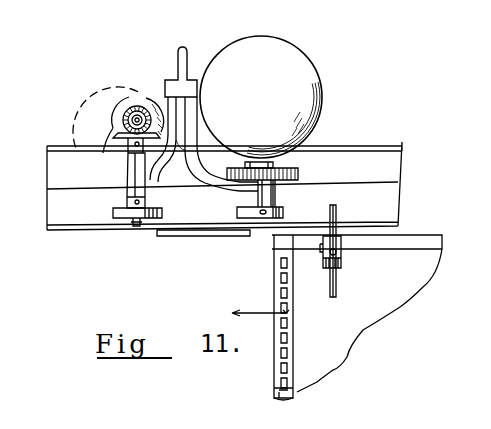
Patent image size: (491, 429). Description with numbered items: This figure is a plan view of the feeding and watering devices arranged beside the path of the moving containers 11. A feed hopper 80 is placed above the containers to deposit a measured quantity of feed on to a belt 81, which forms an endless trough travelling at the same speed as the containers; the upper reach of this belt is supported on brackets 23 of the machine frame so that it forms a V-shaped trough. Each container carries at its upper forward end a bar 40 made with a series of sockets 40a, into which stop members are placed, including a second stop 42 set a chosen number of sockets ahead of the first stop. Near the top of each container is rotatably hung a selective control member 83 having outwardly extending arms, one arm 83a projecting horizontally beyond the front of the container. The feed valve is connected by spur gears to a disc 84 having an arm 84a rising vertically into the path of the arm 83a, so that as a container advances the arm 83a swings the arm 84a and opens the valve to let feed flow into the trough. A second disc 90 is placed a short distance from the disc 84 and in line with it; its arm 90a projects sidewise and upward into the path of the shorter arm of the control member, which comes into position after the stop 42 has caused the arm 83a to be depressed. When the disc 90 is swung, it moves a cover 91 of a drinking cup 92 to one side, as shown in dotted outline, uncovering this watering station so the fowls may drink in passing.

The container 11 is at (410, 288).
The bracket 23 is at (185, 238).
The bar 40 is at (278, 365).
The socket 40a is at (282, 277).
The second stop 42 is at (318, 382).
The feed hopper 80 is at (305, 57).
The belt 81 is at (340, 153).
The selective control member 83 is at (336, 258).
The arm 83a is at (337, 212).
The disc 84 is at (273, 219).
The arm 84a is at (258, 220).
The second disc 90 is at (128, 217).
The arm 90a is at (136, 226).
The cover 91 is at (88, 102).
The drinking cup 92 is at (118, 167).